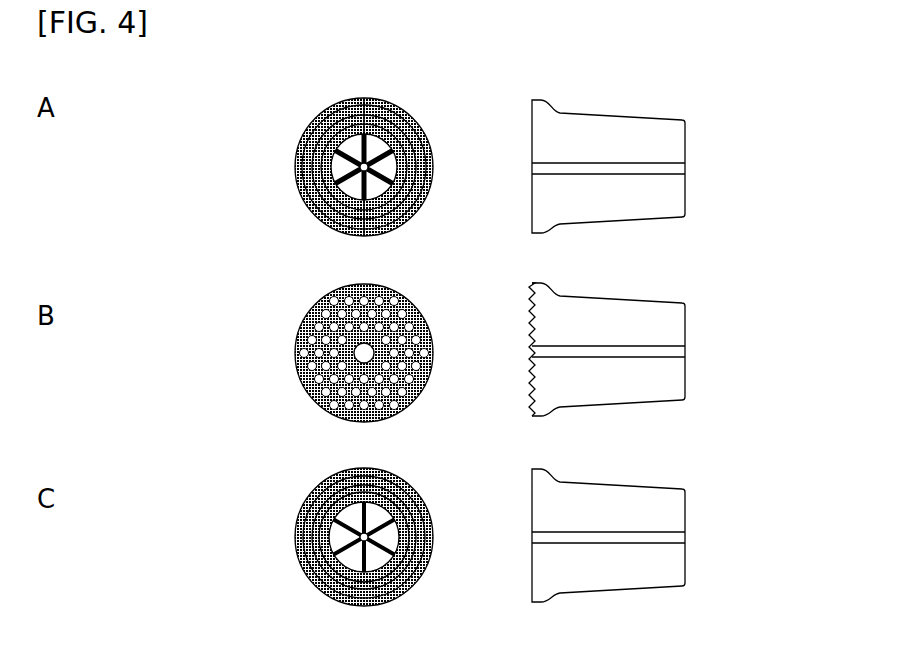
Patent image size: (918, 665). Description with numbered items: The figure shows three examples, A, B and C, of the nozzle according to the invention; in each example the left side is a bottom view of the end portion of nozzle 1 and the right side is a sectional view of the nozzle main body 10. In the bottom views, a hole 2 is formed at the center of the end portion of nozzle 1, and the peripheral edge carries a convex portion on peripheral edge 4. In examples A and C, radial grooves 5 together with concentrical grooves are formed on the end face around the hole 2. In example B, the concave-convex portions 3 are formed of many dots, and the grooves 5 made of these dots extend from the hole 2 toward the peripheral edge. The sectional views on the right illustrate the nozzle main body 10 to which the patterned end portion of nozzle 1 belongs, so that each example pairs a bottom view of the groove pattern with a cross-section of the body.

The end portion of nozzle 1 is at (268, 167).
The hole 2 is at (358, 165).
The concave-convex portion 3 is at (398, 150).
The convex portion on peripheral edge 4 is at (403, 222).
The groove 5 is at (358, 187).
The nozzle main body 10 is at (618, 109).